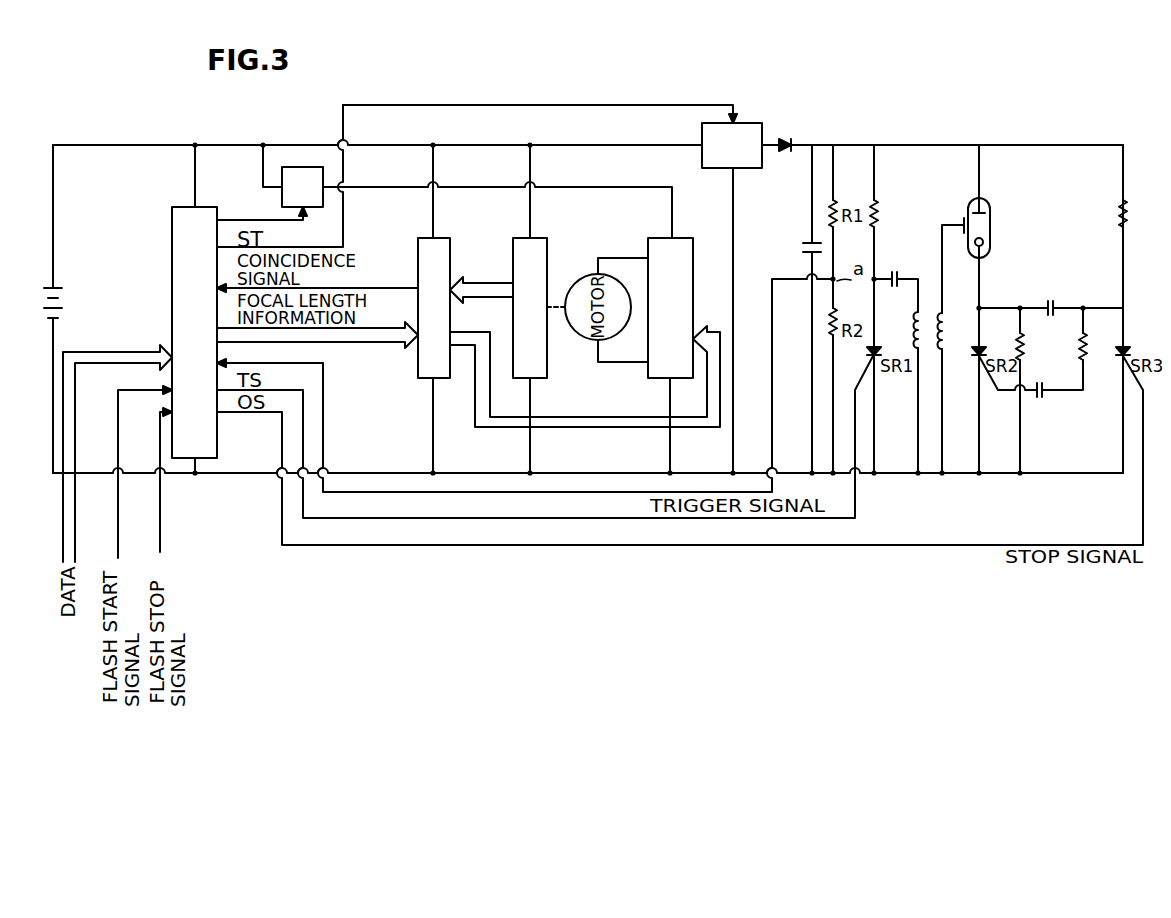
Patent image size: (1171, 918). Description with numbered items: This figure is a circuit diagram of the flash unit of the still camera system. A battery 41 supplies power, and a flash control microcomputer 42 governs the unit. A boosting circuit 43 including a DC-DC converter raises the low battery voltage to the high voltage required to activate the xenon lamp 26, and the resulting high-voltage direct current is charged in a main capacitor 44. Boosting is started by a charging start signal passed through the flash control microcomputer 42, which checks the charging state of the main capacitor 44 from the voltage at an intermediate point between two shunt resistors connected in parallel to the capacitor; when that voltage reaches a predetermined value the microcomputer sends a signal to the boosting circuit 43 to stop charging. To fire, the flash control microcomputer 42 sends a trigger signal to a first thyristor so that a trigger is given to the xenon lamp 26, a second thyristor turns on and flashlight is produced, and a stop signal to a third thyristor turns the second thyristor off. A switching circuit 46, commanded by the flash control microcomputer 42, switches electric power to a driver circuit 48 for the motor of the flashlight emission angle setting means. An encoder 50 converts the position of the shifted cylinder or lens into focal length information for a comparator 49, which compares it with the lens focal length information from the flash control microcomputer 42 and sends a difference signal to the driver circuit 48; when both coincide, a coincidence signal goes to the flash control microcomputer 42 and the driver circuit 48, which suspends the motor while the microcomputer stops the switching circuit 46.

The xenon lamp 26 is at (991, 222).
The battery 41 is at (67, 301).
The flash control microcomputer 42 is at (185, 207).
The boosting circuit 43 is at (763, 123).
The main capacitor 44 is at (809, 248).
The switching circuit 46 is at (297, 173).
The driver circuit 48 is at (680, 238).
The comparator 49 is at (447, 238).
The encoder 50 is at (542, 238).